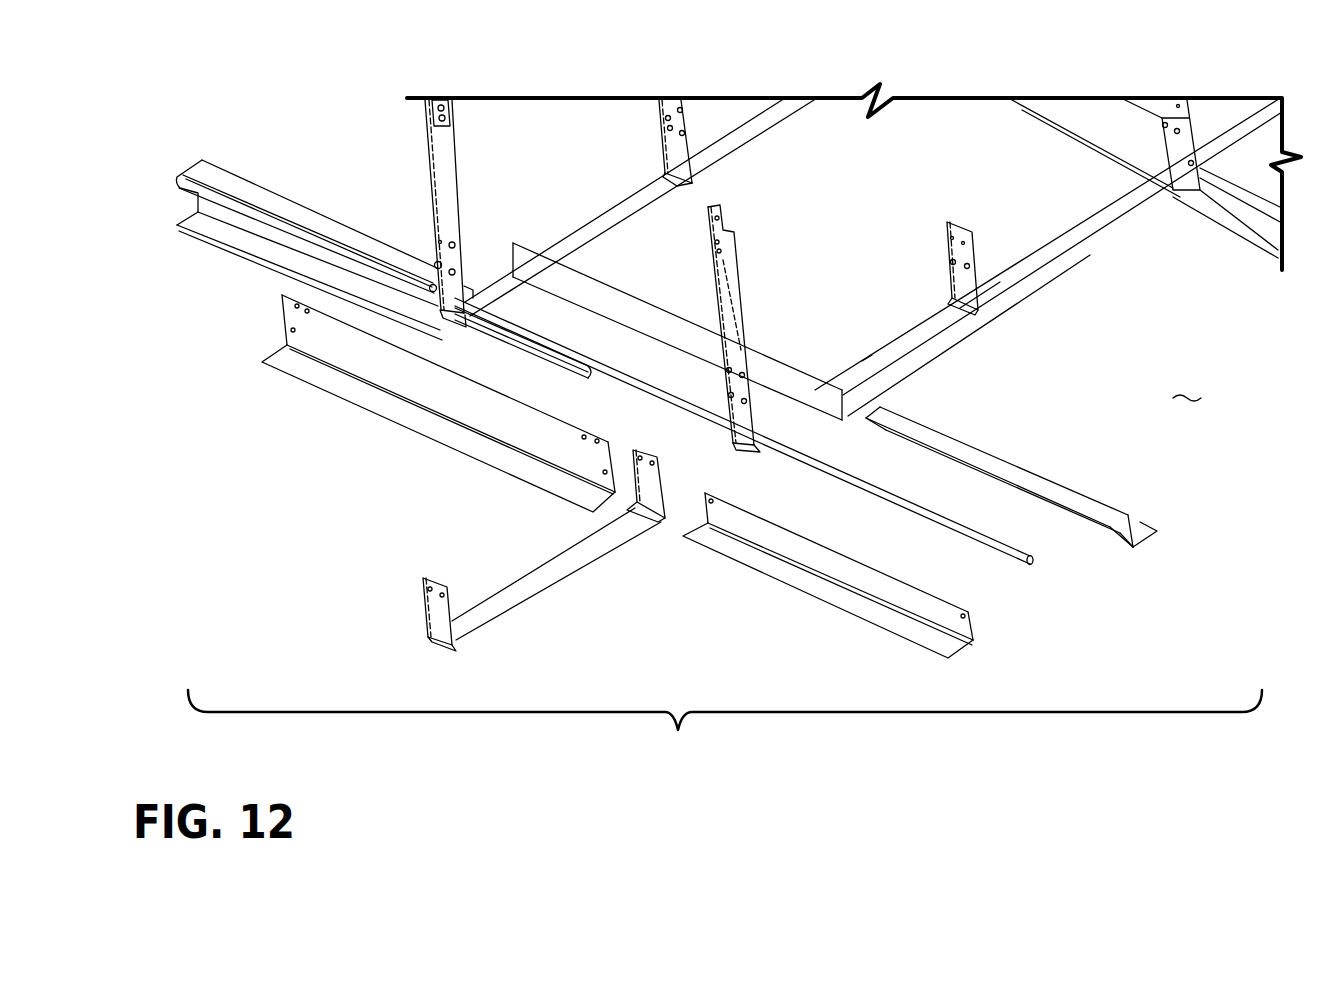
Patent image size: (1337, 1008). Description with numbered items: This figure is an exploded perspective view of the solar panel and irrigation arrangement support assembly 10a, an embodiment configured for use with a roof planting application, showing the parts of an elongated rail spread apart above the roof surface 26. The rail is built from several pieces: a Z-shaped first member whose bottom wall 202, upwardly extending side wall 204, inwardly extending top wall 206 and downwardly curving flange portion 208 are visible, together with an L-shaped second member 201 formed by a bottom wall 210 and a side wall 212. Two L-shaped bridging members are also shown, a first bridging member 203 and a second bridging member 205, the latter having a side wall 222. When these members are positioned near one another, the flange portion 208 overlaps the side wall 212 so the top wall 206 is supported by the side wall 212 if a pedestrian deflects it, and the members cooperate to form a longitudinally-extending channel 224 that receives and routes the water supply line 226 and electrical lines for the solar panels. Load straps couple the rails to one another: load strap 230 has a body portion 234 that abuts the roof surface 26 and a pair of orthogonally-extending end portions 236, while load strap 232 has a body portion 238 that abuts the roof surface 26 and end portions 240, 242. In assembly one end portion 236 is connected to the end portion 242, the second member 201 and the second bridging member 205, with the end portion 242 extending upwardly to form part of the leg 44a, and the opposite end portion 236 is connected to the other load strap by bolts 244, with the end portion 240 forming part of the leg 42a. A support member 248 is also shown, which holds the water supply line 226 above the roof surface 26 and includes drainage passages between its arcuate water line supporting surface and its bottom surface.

The solar panel and irrigation arrangement support assembly 10a is at (725, 727).
The roof surface 26 is at (1187, 385).
The leg 42a is at (782, 207).
The leg 44a is at (628, 276).
The second member 201 is at (827, 589).
The bottom wall 202 is at (1133, 525).
The first bridging member 203 is at (673, 311).
The side wall 204 is at (1135, 522).
The second bridging member 205 is at (420, 408).
The top wall 206 is at (1051, 497).
The flange portion 208 is at (1050, 490).
The bottom wall 210 is at (832, 593).
The side wall 212 is at (912, 598).
The side wall 222 is at (452, 442).
The longitudinally-extending channel 224 is at (352, 357).
The water supply line 226 is at (1018, 562).
The load strap 230 is at (808, 374).
The load strap 232 is at (850, 359).
The body portion 234 is at (568, 565).
The end portion 236 is at (435, 615).
The body portion 238 is at (910, 348).
The end portion 240 is at (966, 287).
The end portion 242 is at (732, 280).
The bolt 244 is at (945, 273).
The support member 248 is at (542, 365).